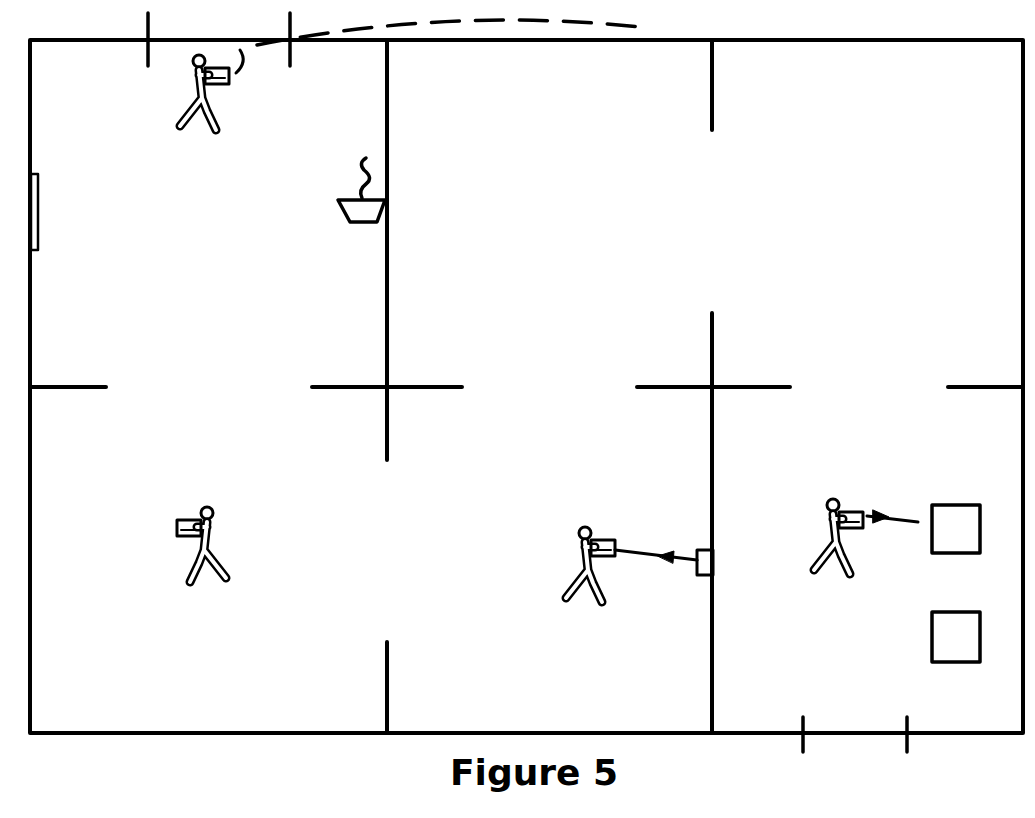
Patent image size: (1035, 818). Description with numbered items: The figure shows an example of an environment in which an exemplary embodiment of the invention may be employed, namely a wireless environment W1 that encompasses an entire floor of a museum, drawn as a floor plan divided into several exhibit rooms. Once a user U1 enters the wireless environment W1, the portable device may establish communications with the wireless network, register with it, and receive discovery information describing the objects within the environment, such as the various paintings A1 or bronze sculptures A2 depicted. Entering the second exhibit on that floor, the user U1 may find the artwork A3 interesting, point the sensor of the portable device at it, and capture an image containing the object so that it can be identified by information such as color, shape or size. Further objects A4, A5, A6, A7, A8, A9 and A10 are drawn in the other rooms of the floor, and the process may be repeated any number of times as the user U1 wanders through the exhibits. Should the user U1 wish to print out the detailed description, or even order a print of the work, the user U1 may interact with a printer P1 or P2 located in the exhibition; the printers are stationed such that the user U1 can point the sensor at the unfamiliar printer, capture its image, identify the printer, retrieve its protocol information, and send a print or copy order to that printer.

The wireless environment W1 is at (43, 735).
The user U1 is at (376, 88).
The paintings A1 is at (68, 280).
The bronze sculptures A2 is at (342, 198).
The artwork A3 is at (178, 522).
The area 4 A4 is at (286, 687).
The area 5 A5 is at (530, 691).
The area 6 A6 is at (639, 578).
The area 7 A7 is at (387, 250).
The area 8 A8 is at (625, 85).
The area 9 A9 is at (768, 399).
The area 10 A10 is at (984, 292).
The printer P1 is at (897, 536).
The printer P2 is at (956, 637).